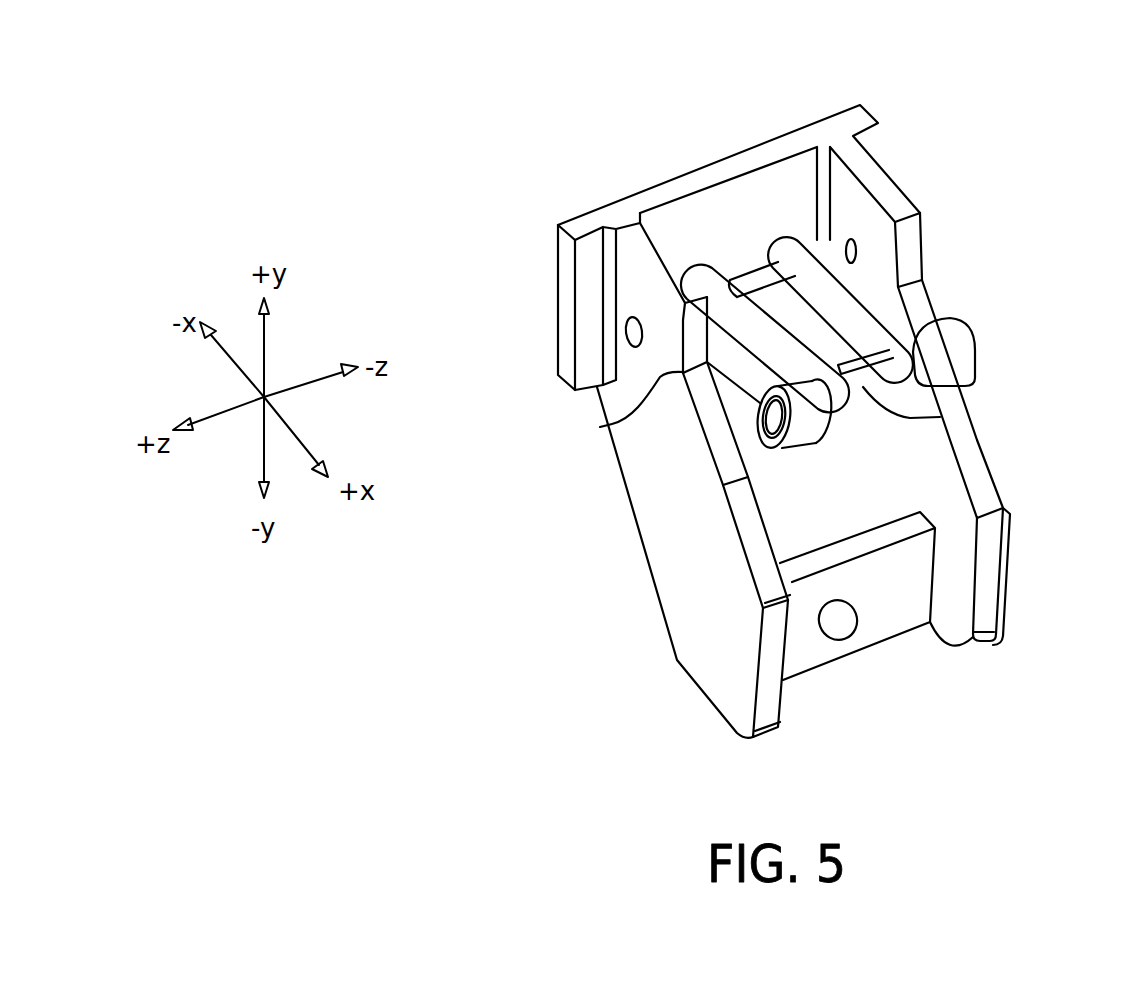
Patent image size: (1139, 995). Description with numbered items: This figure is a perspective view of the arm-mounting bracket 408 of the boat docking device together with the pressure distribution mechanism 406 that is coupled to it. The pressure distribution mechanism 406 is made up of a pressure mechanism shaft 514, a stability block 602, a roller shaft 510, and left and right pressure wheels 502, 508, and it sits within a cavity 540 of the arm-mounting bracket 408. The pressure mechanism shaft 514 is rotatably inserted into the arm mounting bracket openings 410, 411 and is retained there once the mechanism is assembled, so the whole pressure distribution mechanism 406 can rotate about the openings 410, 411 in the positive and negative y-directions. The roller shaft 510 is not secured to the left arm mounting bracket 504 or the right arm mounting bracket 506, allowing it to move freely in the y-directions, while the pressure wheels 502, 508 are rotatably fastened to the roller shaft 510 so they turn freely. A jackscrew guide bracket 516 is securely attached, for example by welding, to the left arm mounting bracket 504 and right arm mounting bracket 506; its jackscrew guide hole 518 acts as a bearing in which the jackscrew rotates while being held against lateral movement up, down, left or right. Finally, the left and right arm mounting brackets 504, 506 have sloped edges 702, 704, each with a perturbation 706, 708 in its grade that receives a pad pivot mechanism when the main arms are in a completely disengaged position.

The pressure distribution mechanism 406 is at (852, 238).
The arm-mounting bracket 408 is at (673, 190).
The arm mounting bracket opening 410 is at (630, 340).
The arm mounting bracket opening 411 is at (850, 322).
The left pressure wheel 502 is at (785, 391).
The left arm mounting bracket 504 is at (690, 552).
The right arm mounting bracket 506 is at (1000, 520).
The right pressure wheel 508 is at (957, 340).
The roller shaft 510 is at (940, 417).
The pressure mechanism shaft 514 is at (750, 277).
The jackscrew guide bracket 516 is at (883, 608).
The jackscrew guide hole 518 is at (840, 623).
The cavity 540 is at (816, 530).
The stability block 602 is at (807, 307).
The sloped edge 702 is at (733, 508).
The sloped edge 704 is at (975, 447).
The perturbation 706 is at (600, 427).
The perturbation 708 is at (922, 280).